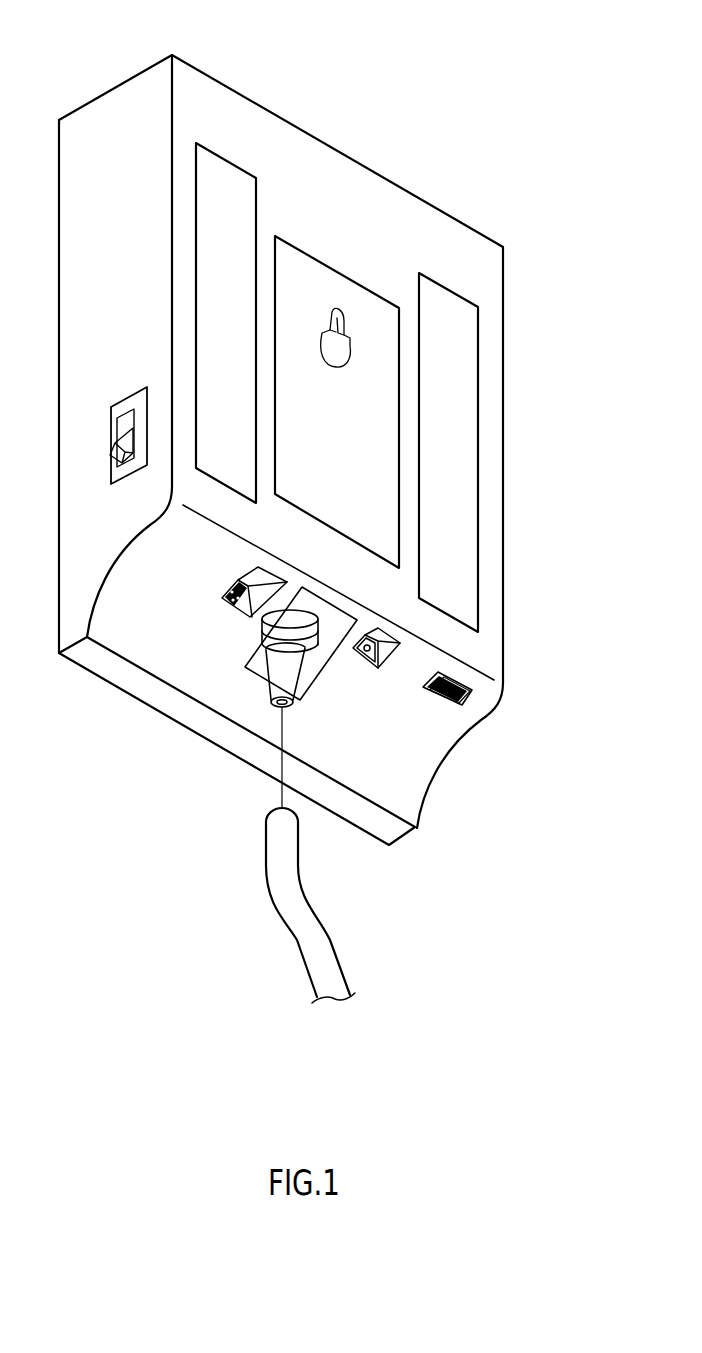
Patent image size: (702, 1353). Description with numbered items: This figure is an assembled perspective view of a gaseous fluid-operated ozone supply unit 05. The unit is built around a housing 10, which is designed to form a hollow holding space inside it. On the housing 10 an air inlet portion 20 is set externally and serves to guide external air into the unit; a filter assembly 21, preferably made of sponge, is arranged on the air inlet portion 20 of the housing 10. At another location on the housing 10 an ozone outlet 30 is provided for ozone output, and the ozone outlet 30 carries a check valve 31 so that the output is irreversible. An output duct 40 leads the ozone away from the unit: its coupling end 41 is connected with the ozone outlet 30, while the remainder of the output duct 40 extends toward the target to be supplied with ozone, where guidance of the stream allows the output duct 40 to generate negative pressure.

The gaseous fluid-operated ozone supply unit 05 is at (507, 107).
The housing 10 is at (480, 257).
The air inlet portion 20 is at (470, 693).
The filter assembly 21 is at (462, 708).
The ozone outlet 30 is at (290, 683).
The check valve 31 is at (322, 663).
The output duct 40 is at (322, 936).
The coupling end 41 is at (277, 841).